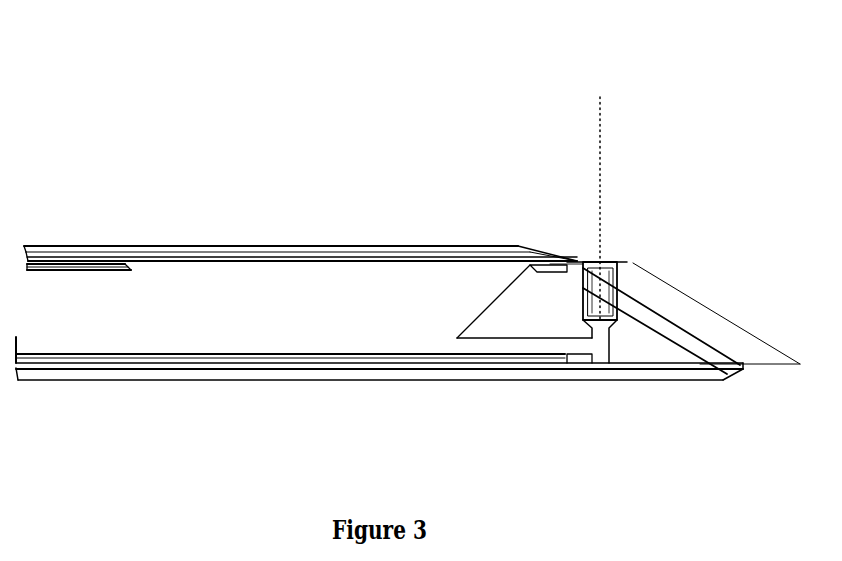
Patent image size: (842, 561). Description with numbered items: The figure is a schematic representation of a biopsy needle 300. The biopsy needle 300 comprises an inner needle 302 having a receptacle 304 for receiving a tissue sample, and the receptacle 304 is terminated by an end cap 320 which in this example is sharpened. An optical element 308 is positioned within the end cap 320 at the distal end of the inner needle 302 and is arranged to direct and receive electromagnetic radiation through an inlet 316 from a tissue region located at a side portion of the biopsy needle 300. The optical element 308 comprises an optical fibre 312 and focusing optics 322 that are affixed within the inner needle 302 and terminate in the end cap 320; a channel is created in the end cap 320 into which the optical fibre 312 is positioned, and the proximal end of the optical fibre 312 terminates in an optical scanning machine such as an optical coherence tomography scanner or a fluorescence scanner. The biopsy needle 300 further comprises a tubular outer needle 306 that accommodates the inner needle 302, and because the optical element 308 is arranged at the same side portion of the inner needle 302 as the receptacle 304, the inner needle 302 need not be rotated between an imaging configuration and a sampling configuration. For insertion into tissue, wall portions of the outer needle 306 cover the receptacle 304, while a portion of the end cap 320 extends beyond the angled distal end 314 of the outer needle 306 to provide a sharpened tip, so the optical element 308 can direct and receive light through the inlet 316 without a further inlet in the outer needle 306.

The biopsy needle 300 is at (437, 97).
The inner needle 302 is at (106, 263).
The outer needle 306 is at (301, 222).
The optical fibre 312 is at (79, 290).
The receptacle 304 is at (461, 300).
The inlet 316 is at (587, 262).
The optical element 308 is at (617, 340).
The distal end 314 is at (638, 385).
The end cap 320 is at (700, 300).
The focusing optics 322 is at (716, 291).